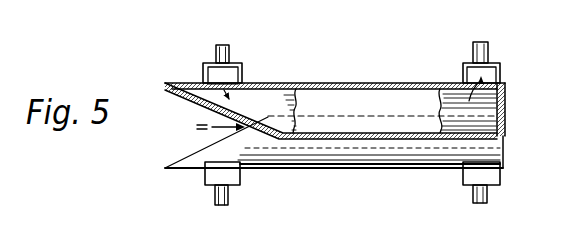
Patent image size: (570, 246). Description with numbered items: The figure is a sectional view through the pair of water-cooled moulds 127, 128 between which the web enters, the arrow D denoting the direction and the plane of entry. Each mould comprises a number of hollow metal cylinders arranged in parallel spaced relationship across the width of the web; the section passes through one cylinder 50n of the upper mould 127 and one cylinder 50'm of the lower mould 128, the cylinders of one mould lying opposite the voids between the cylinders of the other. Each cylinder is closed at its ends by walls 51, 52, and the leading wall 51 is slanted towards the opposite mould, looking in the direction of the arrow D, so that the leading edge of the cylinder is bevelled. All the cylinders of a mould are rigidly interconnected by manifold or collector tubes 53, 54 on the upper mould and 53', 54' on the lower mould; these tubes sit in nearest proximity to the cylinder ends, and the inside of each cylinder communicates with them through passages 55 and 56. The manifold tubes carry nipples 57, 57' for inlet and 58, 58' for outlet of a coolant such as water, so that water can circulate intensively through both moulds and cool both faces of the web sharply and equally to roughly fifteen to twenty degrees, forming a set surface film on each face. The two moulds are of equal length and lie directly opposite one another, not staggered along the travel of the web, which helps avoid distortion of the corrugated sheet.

The hollow metal cylinder 50n is at (393, 97).
The hollow metal cylinder 50'm is at (332, 166).
The end wall 51 is at (213, 108).
The end wall 52 is at (504, 100).
The manifold tube 53 is at (243, 56).
The manifold tube 53' is at (248, 191).
The manifold tube 54 is at (508, 56).
The manifold tube 54' is at (507, 181).
The passage 55 is at (210, 80).
The passage 56 is at (488, 82).
The nipple 57 is at (201, 37).
The nipple 57' is at (197, 207).
The nipple 58 is at (507, 32).
The nipple 58' is at (473, 215).
The mould 127 is at (345, 81).
The mould 128 is at (340, 170).
The arrow D is at (201, 139).